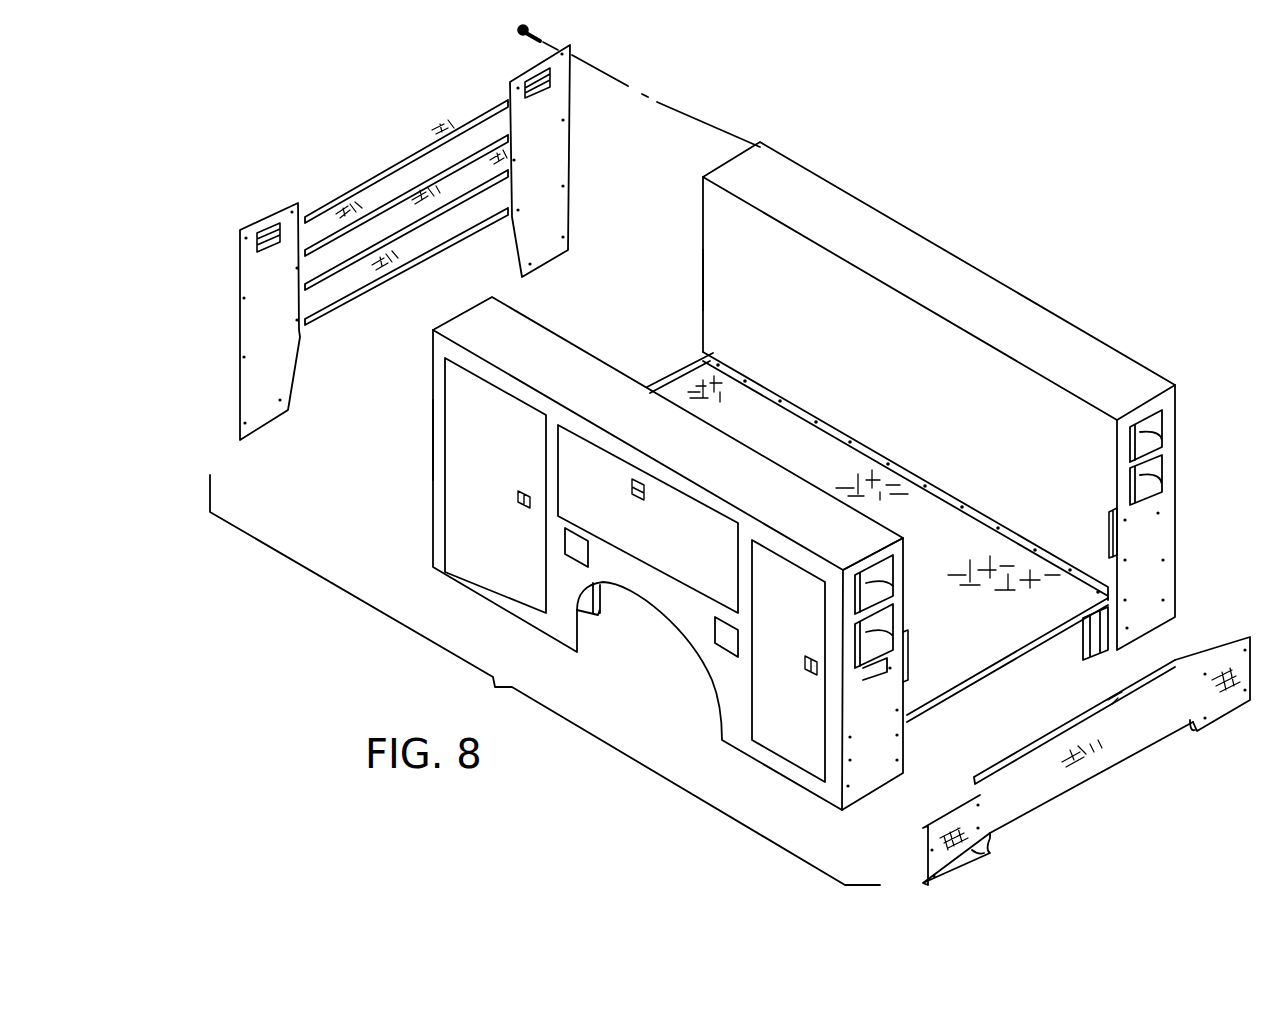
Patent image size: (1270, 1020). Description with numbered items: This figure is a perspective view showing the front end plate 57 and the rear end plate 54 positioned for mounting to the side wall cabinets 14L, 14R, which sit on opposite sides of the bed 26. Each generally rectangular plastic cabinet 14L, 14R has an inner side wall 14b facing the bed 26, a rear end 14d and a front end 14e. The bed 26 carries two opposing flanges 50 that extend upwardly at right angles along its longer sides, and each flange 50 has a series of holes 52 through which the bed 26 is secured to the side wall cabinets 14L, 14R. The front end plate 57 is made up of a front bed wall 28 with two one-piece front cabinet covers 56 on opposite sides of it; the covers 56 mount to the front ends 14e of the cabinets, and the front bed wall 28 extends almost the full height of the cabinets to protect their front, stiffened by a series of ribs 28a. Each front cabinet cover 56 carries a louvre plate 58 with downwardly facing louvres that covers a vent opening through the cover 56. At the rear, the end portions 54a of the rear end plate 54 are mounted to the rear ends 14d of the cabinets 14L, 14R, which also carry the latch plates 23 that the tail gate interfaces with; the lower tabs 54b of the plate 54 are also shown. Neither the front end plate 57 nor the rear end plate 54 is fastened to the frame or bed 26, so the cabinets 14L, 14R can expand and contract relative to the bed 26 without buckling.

The front end plate 57 is at (288, 150).
The front cabinet cover 56 is at (563, 213).
The louvre plate 58 is at (534, 80).
The front bed wall 28 is at (402, 178).
The ribs 28a is at (330, 275).
The right side wall cabinet 14R is at (912, 250).
The left side wall cabinet 14L is at (496, 580).
The front end 14e is at (703, 283).
The inner side wall 14b is at (903, 369).
The rear end 14d is at (1160, 590).
The latch plate 23 is at (1108, 535).
The flange 50 is at (938, 490).
The holes 52 is at (888, 462).
The bed 26 is at (955, 545).
The rear end plate 54 is at (1083, 775).
The end portion 54a is at (1220, 700).
The tab 54b is at (935, 881).